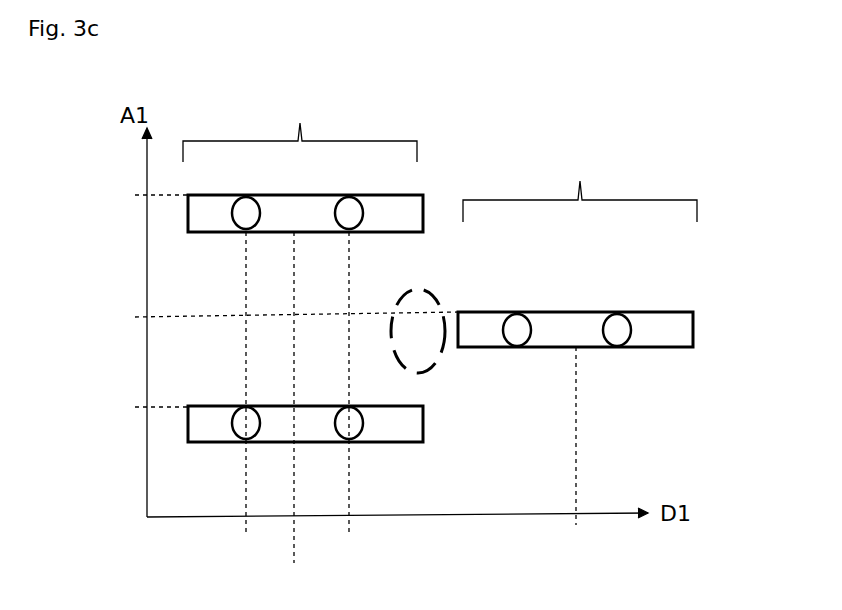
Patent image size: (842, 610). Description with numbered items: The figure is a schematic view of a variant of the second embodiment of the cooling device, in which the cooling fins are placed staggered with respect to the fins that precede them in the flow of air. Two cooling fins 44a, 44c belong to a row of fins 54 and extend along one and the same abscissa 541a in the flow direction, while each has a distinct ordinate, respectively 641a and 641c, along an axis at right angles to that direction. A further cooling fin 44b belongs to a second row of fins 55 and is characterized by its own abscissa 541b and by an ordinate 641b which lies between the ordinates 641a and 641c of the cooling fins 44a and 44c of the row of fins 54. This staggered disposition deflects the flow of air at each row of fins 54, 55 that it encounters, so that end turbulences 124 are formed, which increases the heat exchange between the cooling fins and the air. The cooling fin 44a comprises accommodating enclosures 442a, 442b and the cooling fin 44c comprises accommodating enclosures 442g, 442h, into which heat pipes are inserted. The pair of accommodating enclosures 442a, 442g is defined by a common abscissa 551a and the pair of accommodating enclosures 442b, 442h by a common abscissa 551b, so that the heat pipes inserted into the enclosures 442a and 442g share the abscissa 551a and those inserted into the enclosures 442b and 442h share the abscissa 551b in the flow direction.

The cooling fin 44a is at (289, 200).
The cooling fin 44b is at (650, 311).
The cooling fin 44c is at (301, 497).
The accommodating enclosure 442a is at (246, 232).
The accommodating enclosure 442b is at (349, 232).
The accommodating enclosure 442g is at (246, 442).
The accommodating enclosure 442h is at (349, 442).
The row of fins 54 is at (300, 128).
The row of fins 55 is at (580, 189).
The end turbulences 124 is at (392, 330).
The ordinate 641a is at (129, 193).
The ordinate 641b is at (265, 318).
The ordinate 641c is at (129, 406).
The abscissa 551a is at (247, 397).
The abscissa 551b is at (356, 397).
The abscissa 541a is at (299, 412).
The abscissa 541b is at (583, 450).